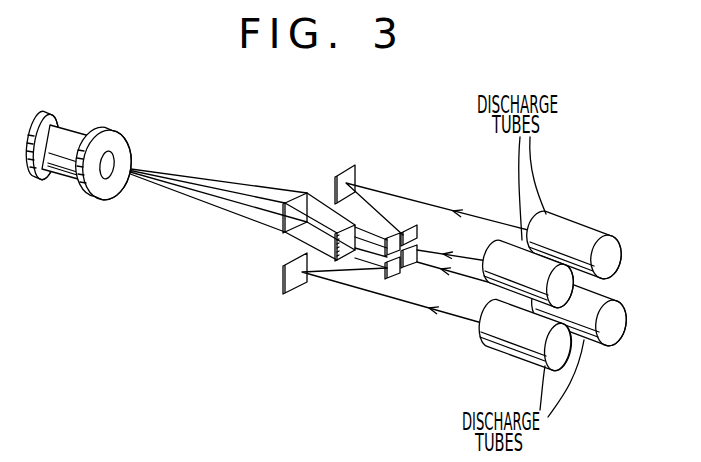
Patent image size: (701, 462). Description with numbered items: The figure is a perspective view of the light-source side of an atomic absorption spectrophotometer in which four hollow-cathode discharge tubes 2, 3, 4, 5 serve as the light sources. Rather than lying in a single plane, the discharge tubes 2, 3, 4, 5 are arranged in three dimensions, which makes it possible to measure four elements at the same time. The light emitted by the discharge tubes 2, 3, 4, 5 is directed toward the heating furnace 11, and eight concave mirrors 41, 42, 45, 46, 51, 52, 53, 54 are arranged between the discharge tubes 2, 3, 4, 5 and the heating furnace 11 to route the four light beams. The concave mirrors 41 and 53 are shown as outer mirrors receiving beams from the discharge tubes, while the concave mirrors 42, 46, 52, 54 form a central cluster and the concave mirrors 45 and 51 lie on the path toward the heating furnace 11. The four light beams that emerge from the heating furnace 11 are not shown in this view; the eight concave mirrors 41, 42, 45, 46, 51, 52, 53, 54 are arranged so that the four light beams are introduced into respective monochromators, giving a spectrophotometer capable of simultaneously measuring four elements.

The heating furnace 11 is at (80, 132).
The hollow-cathode discharge tube 2 is at (585, 232).
The hollow-cathode discharge tube 3 is at (510, 250).
The hollow-cathode discharge tube 4 is at (596, 342).
The hollow-cathode discharge tube 5 is at (502, 352).
The concave mirror 41 is at (350, 166).
The concave mirror 42 is at (410, 228).
The concave mirror 45 is at (285, 231).
The concave mirror 46 is at (392, 258).
The concave mirror 51 is at (342, 262).
The concave mirror 52 is at (420, 250).
The concave mirror 53 is at (285, 286).
The concave mirror 54 is at (394, 279).